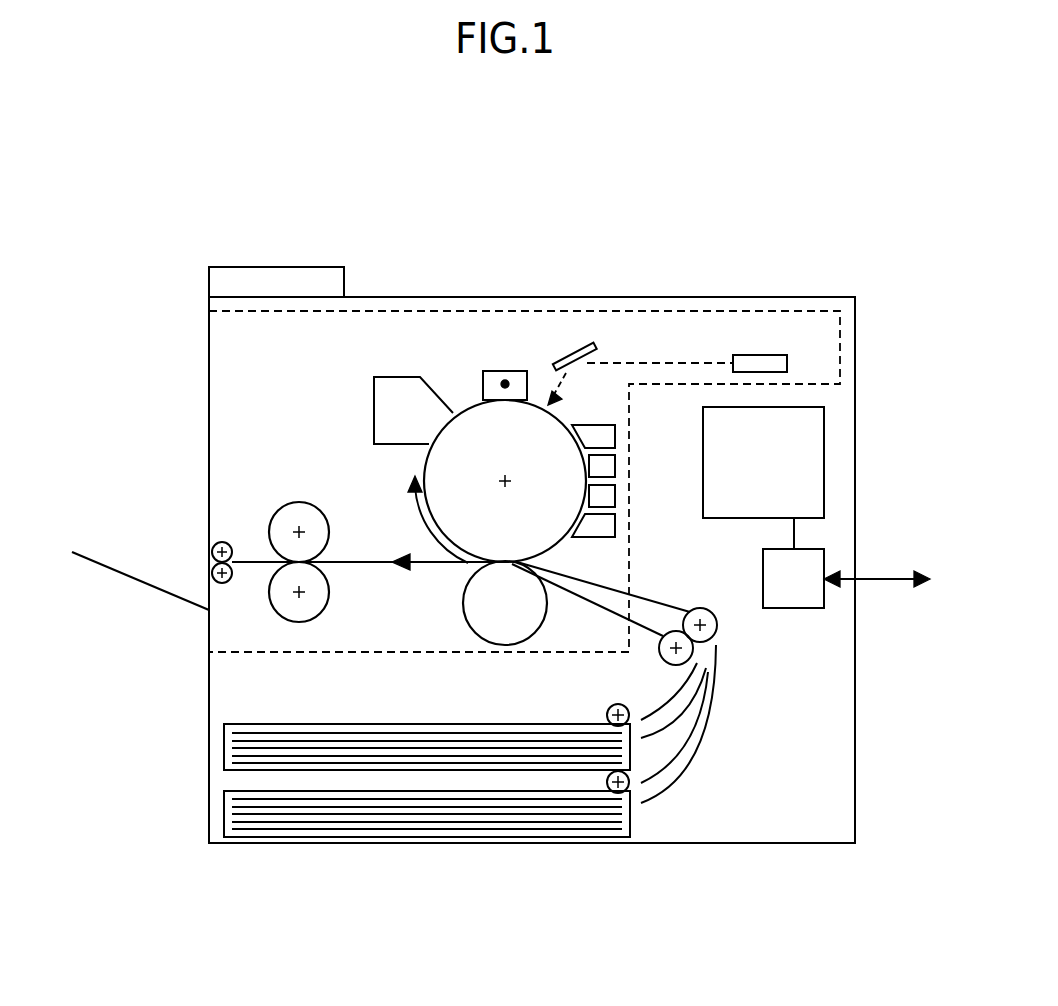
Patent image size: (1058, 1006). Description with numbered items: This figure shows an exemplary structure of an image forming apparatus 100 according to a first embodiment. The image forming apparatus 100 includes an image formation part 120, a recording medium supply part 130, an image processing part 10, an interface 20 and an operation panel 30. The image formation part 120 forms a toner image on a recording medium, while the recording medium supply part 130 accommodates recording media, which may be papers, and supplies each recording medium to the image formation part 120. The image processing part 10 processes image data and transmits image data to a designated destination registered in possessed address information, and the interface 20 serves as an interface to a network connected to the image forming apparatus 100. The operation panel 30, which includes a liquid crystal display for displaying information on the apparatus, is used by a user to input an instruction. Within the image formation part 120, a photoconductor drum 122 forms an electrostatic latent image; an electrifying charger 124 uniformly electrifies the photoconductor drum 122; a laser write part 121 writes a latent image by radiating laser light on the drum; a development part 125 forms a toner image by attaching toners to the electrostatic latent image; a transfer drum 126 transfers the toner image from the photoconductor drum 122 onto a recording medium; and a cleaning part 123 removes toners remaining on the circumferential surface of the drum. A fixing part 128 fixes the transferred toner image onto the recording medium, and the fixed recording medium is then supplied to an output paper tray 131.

The image forming apparatus 100 is at (278, 222).
The operation panel 30 is at (315, 267).
The image formation part 120 is at (646, 311).
The laser write part 121 is at (787, 363).
The photoconductor drum 122 is at (527, 533).
The cleaning part 123 is at (374, 384).
The electrifying charger 124 is at (504, 371).
The development part 125 is at (615, 436).
The transfer drum 126 is at (478, 637).
The fixing part 128 is at (300, 502).
The recording medium supply part 130 is at (226, 750).
The output paper tray 131 is at (119, 574).
The image processing part 10 is at (824, 462).
The interface 20 is at (792, 608).